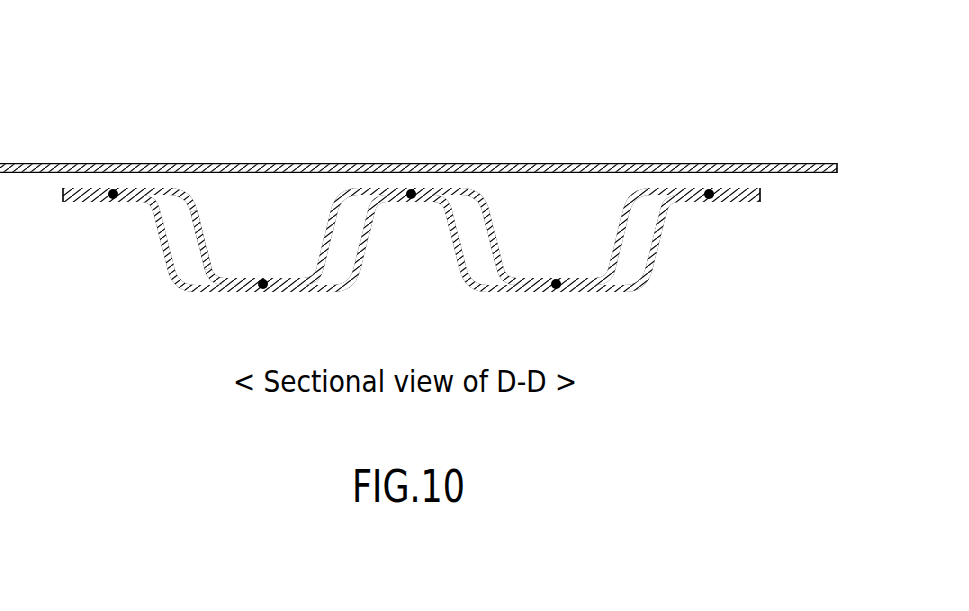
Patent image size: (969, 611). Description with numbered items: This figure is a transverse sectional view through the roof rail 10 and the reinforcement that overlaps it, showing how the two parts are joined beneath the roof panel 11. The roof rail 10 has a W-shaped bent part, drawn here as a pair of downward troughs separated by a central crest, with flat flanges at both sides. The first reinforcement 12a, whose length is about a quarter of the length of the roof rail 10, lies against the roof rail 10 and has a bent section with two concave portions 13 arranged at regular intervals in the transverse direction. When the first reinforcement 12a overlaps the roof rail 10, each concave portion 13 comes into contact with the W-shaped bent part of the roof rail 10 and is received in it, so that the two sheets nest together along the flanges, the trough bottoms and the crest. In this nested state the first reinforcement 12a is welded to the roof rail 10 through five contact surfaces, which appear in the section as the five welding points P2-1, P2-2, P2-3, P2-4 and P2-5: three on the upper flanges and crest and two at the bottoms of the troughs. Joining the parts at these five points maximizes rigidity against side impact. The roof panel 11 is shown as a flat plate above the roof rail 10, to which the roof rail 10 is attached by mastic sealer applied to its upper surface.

The roof rail 10 is at (397, 232).
The roof panel 11 is at (518, 156).
The first reinforcement 12a is at (186, 224).
The concave portion 13 is at (320, 233).
The welding point P2-1 is at (113, 193).
The welding point P2-2 is at (264, 283).
The welding point P2-3 is at (411, 192).
The welding point P2-4 is at (557, 284).
The welding point P2-5 is at (709, 193).